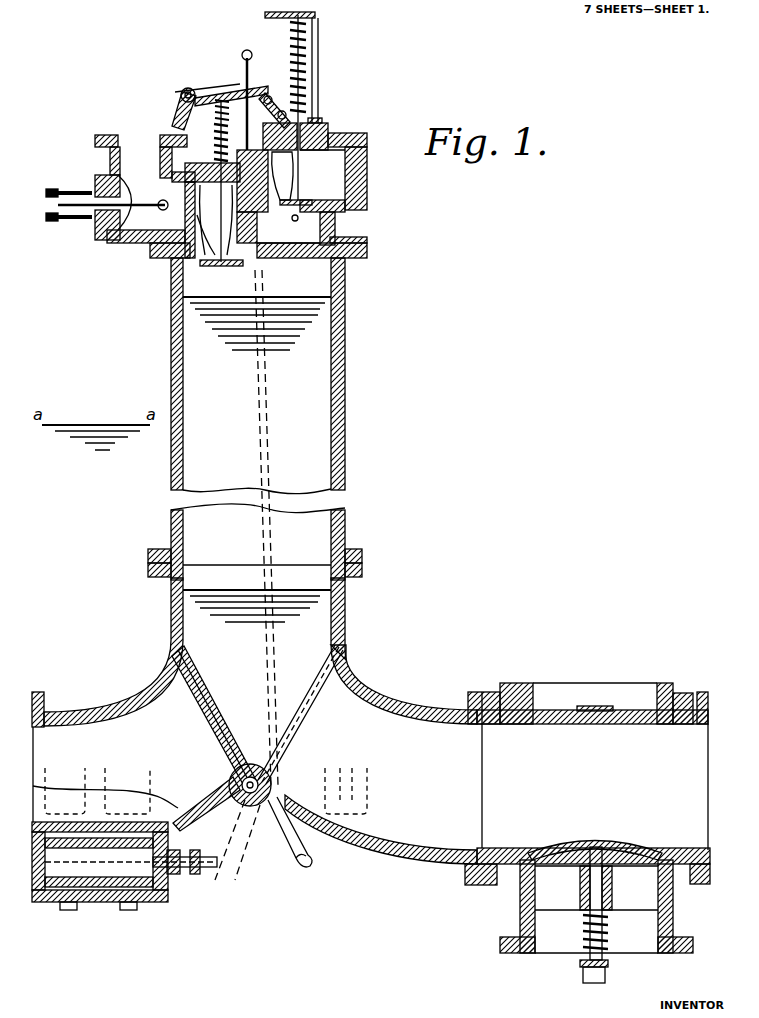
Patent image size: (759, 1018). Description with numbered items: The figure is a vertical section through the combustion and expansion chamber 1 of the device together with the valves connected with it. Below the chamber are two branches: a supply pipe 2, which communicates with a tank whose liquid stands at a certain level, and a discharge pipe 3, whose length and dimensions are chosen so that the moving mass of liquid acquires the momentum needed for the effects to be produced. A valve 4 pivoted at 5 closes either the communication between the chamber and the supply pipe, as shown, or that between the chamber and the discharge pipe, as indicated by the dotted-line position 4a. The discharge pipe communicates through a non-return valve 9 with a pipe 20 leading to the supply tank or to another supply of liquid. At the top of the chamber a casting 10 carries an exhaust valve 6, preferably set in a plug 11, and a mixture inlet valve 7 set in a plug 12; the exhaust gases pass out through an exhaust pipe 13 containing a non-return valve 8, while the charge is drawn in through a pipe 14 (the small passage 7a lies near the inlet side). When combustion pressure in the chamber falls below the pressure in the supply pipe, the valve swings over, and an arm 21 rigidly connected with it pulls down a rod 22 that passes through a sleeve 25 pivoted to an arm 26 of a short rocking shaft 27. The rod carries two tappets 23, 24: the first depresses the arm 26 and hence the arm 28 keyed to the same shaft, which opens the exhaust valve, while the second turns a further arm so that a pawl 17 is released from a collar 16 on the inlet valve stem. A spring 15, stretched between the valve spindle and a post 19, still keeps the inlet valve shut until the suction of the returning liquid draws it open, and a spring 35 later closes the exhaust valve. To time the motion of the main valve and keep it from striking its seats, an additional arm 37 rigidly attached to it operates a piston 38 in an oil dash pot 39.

The combustion and expansion chamber 1 is at (258, 376).
The supply pipe 2 is at (107, 700).
The discharge pipe 3 is at (497, 731).
The valve 4 is at (212, 706).
The dotted-line position of valve 4a is at (306, 719).
The pivot 5 is at (233, 775).
The exhaust valve 6 is at (221, 266).
The mixture inlet valve 7 is at (300, 220).
The passage 7a is at (299, 232).
The non-return valve 8 is at (140, 215).
The non-return valve 9 is at (592, 838).
The casting 10 is at (165, 258).
The plug 11 is at (206, 225).
The plug 12 is at (330, 125).
The exhaust pipe 13 is at (133, 148).
The pipe 14 is at (333, 179).
The spring 15 is at (308, 50).
The collar 16 is at (283, 155).
The pawl 17 is at (284, 118).
The post 19 is at (320, 63).
The pipe 20 is at (596, 921).
The arm 21 is at (268, 737).
The rod 22 is at (262, 550).
The tappet 23 is at (251, 55).
The tappet 24 is at (230, 110).
The sleeve 25 is at (268, 88).
The arm 26 is at (232, 87).
The short rocking shaft 27 is at (181, 95).
The arm 28 is at (205, 88).
The spring 35 is at (184, 130).
The additional arm 37 is at (275, 826).
The piston 38 is at (150, 900).
The oil dash pot 39 is at (104, 890).